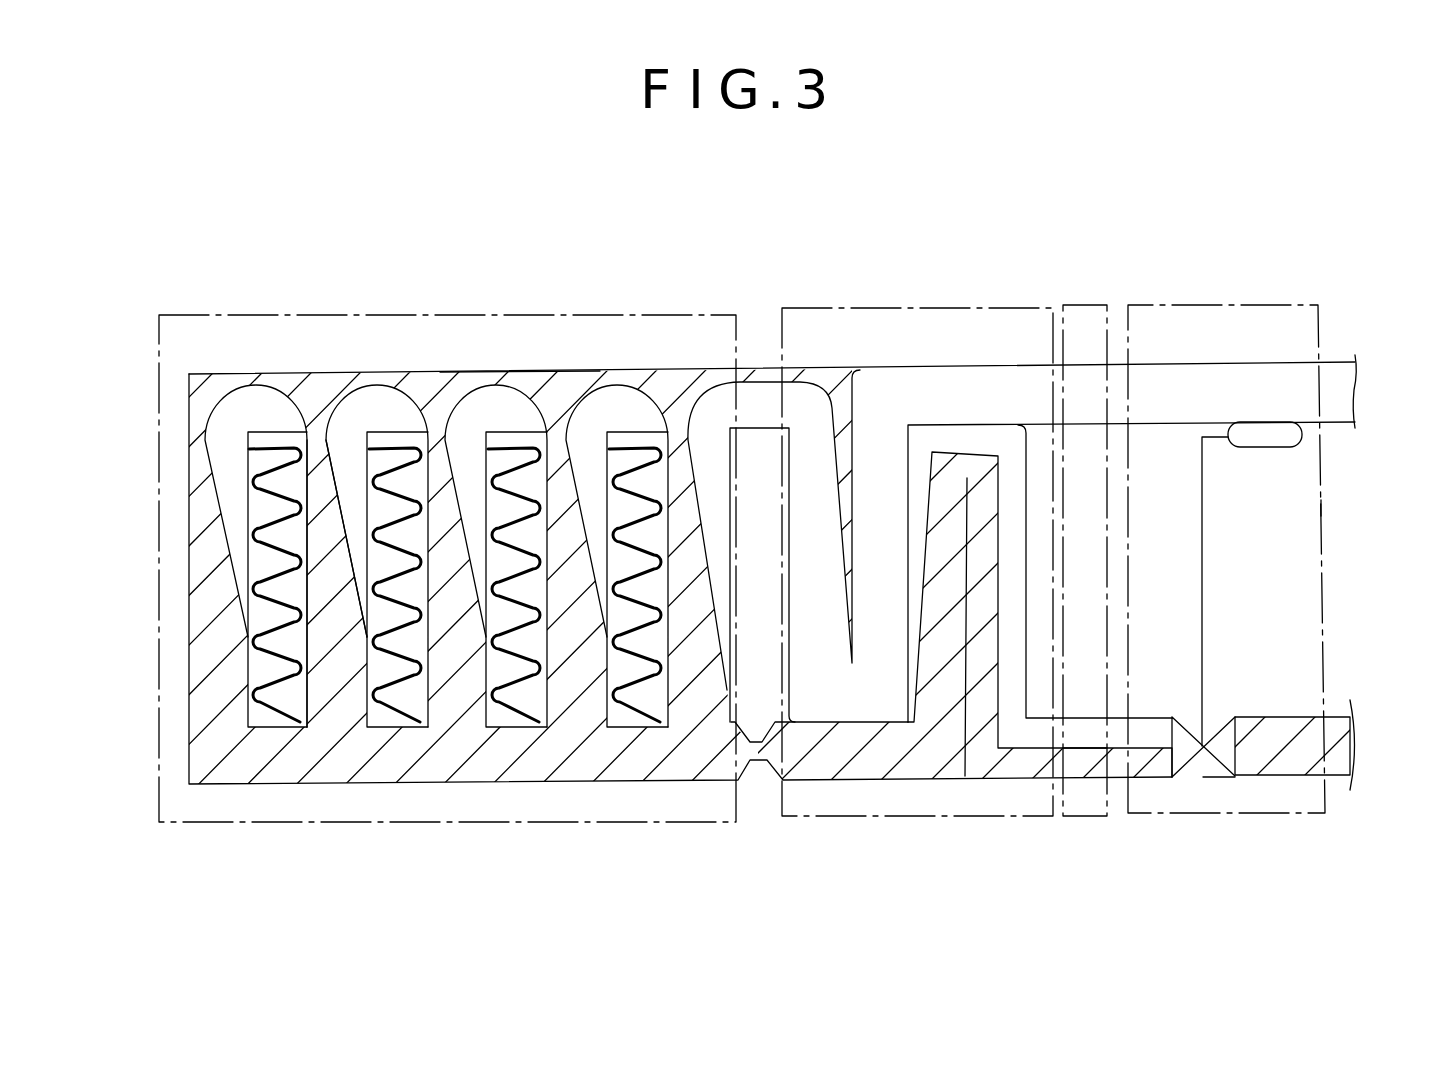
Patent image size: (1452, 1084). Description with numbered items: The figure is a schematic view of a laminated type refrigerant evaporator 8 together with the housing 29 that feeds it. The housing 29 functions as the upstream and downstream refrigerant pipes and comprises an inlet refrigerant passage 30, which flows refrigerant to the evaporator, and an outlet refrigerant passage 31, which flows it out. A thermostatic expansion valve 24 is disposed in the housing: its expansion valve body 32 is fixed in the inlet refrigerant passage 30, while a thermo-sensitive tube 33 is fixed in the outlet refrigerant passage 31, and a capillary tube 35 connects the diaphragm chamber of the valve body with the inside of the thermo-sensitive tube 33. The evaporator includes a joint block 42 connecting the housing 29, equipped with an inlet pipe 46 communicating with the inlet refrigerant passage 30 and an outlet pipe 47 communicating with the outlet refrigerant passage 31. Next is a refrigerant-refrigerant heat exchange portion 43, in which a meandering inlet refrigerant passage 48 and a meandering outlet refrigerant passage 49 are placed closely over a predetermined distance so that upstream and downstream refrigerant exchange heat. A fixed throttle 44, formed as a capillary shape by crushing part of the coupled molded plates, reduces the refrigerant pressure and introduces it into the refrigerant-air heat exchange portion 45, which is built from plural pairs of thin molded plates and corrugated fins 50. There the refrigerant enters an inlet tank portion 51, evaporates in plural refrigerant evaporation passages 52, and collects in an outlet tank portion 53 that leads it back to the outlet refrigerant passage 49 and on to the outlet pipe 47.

The laminated type refrigerant evaporator 8 is at (148, 305).
The thermostatic expansion valve 24 is at (1238, 789).
The housing 29 is at (1322, 508).
The inlet refrigerant passage 30 is at (1280, 720).
The outlet refrigerant passage 31 is at (1223, 375).
The expansion valve body 32 is at (1183, 753).
The thermo-sensitive tube 33 is at (1278, 447).
The capillary tube 35 is at (1204, 594).
The joint block 42 is at (1097, 305).
The refrigerant-refrigerant heat exchange portion 43 is at (948, 305).
The fixed throttle 44 is at (762, 762).
The refrigerant-air heat exchange portion 45 is at (505, 310).
The inlet pipe 46 is at (1087, 785).
The outlet pipe 47 is at (1087, 377).
The inlet refrigerant passage 48 is at (918, 772).
The outlet refrigerant passage 49 is at (905, 395).
The corrugated fins 50 is at (270, 510).
The inlet tank portion 51 is at (425, 778).
The refrigerant evaporation passages 52 is at (232, 432).
The outlet tank portion 53 is at (428, 378).